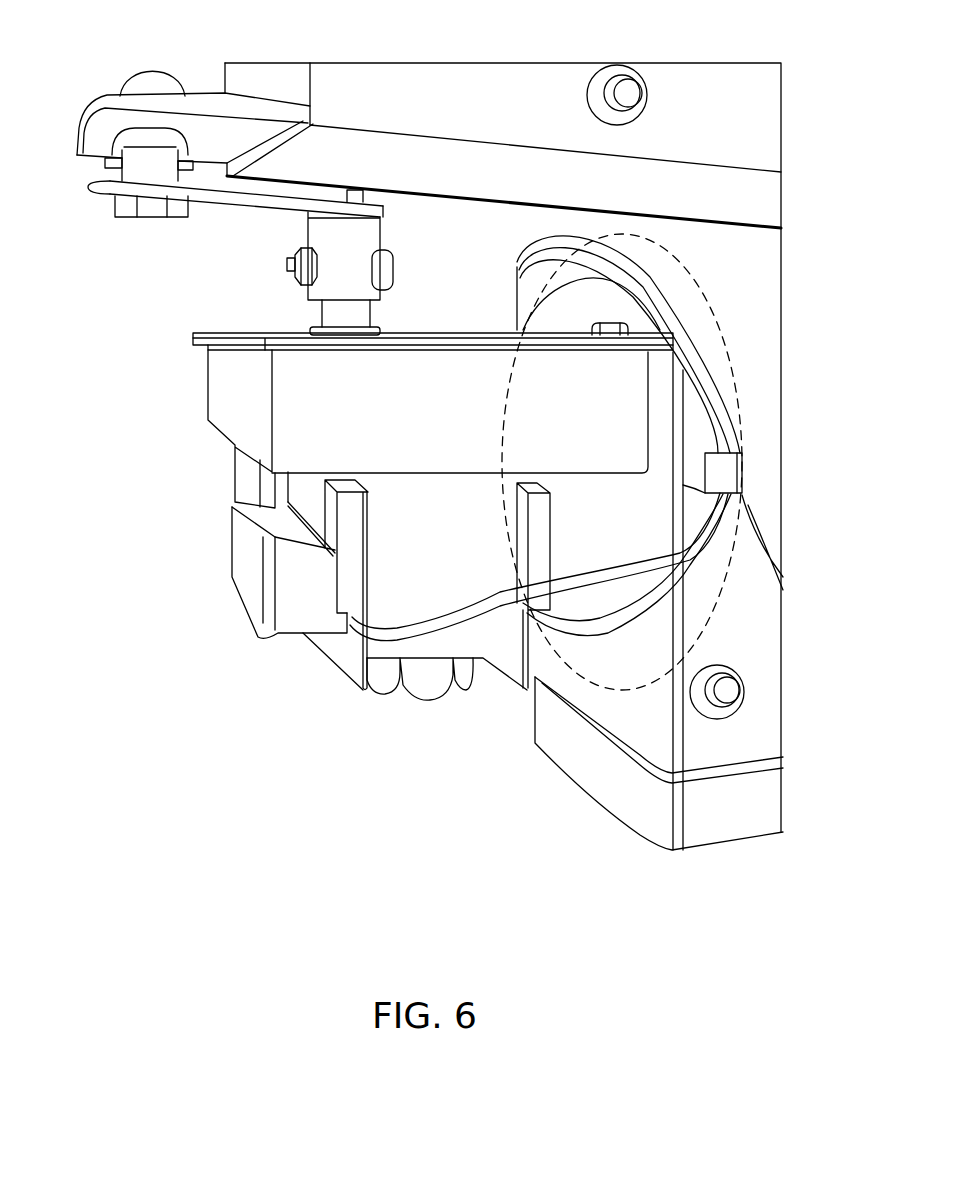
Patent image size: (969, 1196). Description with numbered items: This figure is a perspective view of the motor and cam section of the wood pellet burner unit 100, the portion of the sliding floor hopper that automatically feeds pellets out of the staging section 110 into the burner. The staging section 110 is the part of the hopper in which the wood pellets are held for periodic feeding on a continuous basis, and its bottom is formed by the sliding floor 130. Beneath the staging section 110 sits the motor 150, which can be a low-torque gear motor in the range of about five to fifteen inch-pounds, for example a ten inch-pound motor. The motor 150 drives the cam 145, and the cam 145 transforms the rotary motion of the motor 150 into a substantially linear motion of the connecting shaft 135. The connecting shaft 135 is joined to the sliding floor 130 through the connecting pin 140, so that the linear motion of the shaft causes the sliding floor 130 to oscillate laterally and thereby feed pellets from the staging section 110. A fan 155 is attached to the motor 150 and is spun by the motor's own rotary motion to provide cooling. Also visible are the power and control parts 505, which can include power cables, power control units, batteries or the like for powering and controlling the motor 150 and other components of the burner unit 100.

The wood pellet burner unit 100 is at (157, 735).
The staging section 110 is at (390, 77).
The sliding floor 130 is at (218, 97).
The connecting shaft 135 is at (242, 200).
The connecting pin 140 is at (115, 172).
The cam 145 is at (367, 240).
The motor 150 is at (215, 388).
The fan 155 is at (415, 697).
The power and control parts 505 is at (663, 253).